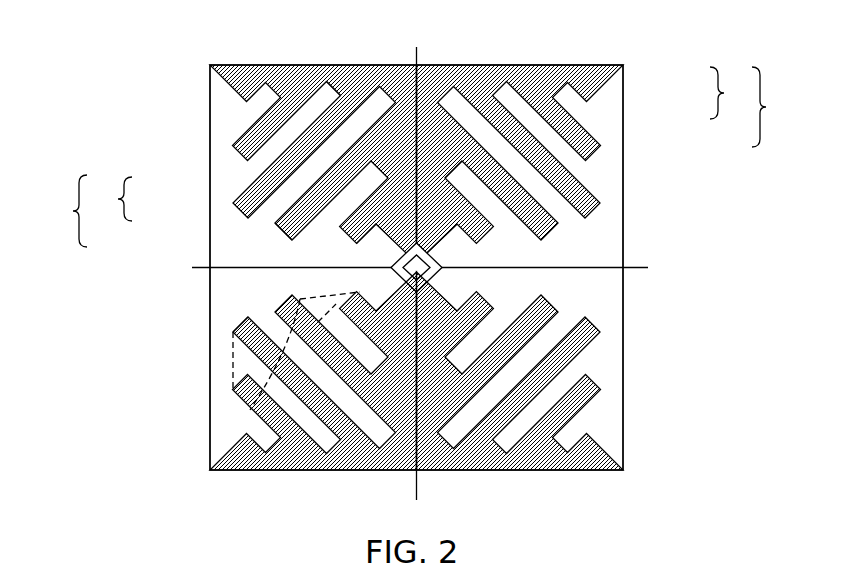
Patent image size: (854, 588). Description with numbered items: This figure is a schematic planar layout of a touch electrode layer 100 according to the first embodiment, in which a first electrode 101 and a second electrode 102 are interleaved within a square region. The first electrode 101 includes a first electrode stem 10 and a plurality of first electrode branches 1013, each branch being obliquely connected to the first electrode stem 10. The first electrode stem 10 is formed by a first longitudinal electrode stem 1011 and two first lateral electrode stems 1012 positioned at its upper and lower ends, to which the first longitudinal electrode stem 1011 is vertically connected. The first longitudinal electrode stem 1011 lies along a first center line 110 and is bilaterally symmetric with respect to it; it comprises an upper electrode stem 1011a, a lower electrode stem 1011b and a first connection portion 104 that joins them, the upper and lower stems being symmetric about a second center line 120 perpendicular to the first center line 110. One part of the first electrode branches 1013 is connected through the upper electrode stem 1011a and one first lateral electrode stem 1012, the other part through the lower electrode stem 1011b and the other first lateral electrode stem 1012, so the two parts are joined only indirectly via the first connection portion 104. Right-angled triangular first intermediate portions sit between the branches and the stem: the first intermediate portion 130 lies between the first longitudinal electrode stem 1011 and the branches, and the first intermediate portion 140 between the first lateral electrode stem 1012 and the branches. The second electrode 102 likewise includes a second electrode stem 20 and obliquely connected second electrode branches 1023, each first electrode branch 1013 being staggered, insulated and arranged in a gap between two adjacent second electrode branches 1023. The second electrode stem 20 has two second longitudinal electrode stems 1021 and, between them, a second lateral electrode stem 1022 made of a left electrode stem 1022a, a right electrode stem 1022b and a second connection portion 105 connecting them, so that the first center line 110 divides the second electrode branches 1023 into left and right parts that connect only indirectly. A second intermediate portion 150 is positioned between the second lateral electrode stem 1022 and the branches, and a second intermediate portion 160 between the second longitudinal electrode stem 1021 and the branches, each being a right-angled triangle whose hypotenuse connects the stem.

The touch sensing device 100 is at (383, 44).
The first center line 110 is at (422, 50).
The second center line 120 is at (648, 265).
The first intermediate portion 130 is at (383, 158).
The first intermediate portion 140 is at (300, 108).
The second intermediate portion 150 is at (257, 410).
The second intermediate portion 160 is at (242, 359).
The first electrode 101 is at (783, 107).
The first electrode stem 10 is at (731, 93).
The first longitudinal electrode stem 1011 is at (471, 134).
The first lateral electrode stem 1012 is at (430, 74).
The first electrode branch 1013 is at (430, 152).
The upper electrode stem 1011a is at (440, 190).
The lower electrode stem 1011b is at (430, 399).
The first connection portion 104 is at (428, 262).
The second connection portion 105 is at (423, 273).
The second electrode 102 is at (60, 211).
The second electrode stem 20 is at (112, 199).
The second longitudinal electrode stem 1021 is at (228, 160).
The second lateral electrode stem 1022 is at (312, 257).
The second electrode branch 1023 is at (280, 332).
The left electrode stem 1022a is at (223, 292).
The right electrode stem 1022b is at (583, 245).